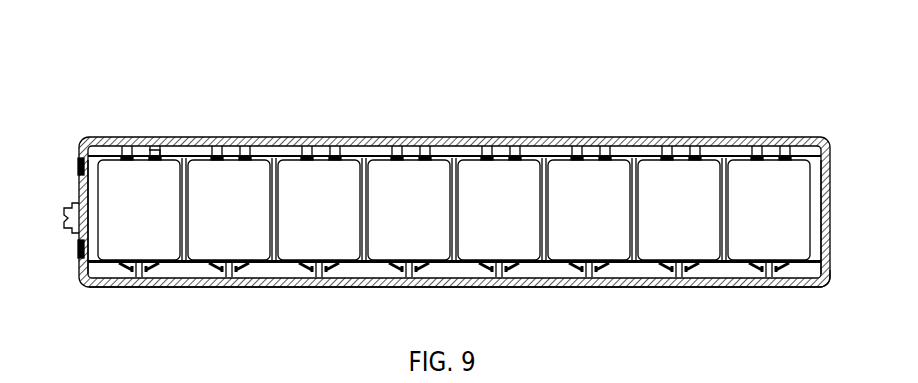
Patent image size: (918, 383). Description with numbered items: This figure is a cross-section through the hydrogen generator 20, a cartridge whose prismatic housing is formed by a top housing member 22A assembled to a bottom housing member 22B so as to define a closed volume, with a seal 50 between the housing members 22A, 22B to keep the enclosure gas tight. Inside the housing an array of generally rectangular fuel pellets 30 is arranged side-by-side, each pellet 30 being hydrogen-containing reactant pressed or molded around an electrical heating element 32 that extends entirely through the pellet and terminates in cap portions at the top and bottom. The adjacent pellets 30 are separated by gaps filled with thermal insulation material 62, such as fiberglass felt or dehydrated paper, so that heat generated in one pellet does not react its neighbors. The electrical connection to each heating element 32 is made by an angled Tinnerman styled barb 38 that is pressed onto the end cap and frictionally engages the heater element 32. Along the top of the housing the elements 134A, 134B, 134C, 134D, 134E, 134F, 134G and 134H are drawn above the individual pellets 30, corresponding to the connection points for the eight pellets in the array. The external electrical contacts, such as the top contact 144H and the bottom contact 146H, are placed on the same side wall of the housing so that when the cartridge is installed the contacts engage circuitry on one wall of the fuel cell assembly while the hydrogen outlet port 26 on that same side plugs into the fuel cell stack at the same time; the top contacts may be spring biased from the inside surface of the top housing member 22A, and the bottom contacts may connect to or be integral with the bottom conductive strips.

The hydrogen generator 20 is at (712, 53).
The top housing member 22A is at (781, 137).
The bottom housing member 22B is at (729, 288).
The hydrogen outlet port 26 is at (75, 203).
The fuel pellet 30 is at (131, 219).
The heating element 32 is at (156, 150).
The Tinnerman styled barb 38 is at (307, 267).
The seal 50 is at (88, 192).
The thermal insulation material 62 is at (185, 249).
The cell terminal 134A is at (128, 152).
The cell terminal 134B is at (221, 152).
The cell terminal 134C is at (312, 155).
The cell terminal 134D is at (402, 155).
The cell terminal 134E is at (492, 155).
The cell terminal 134F is at (582, 155).
The cell terminal 134G is at (673, 152).
The cell terminal 134H is at (763, 152).
The electrical contact 144H is at (79, 168).
The bottom contact 146H is at (78, 252).